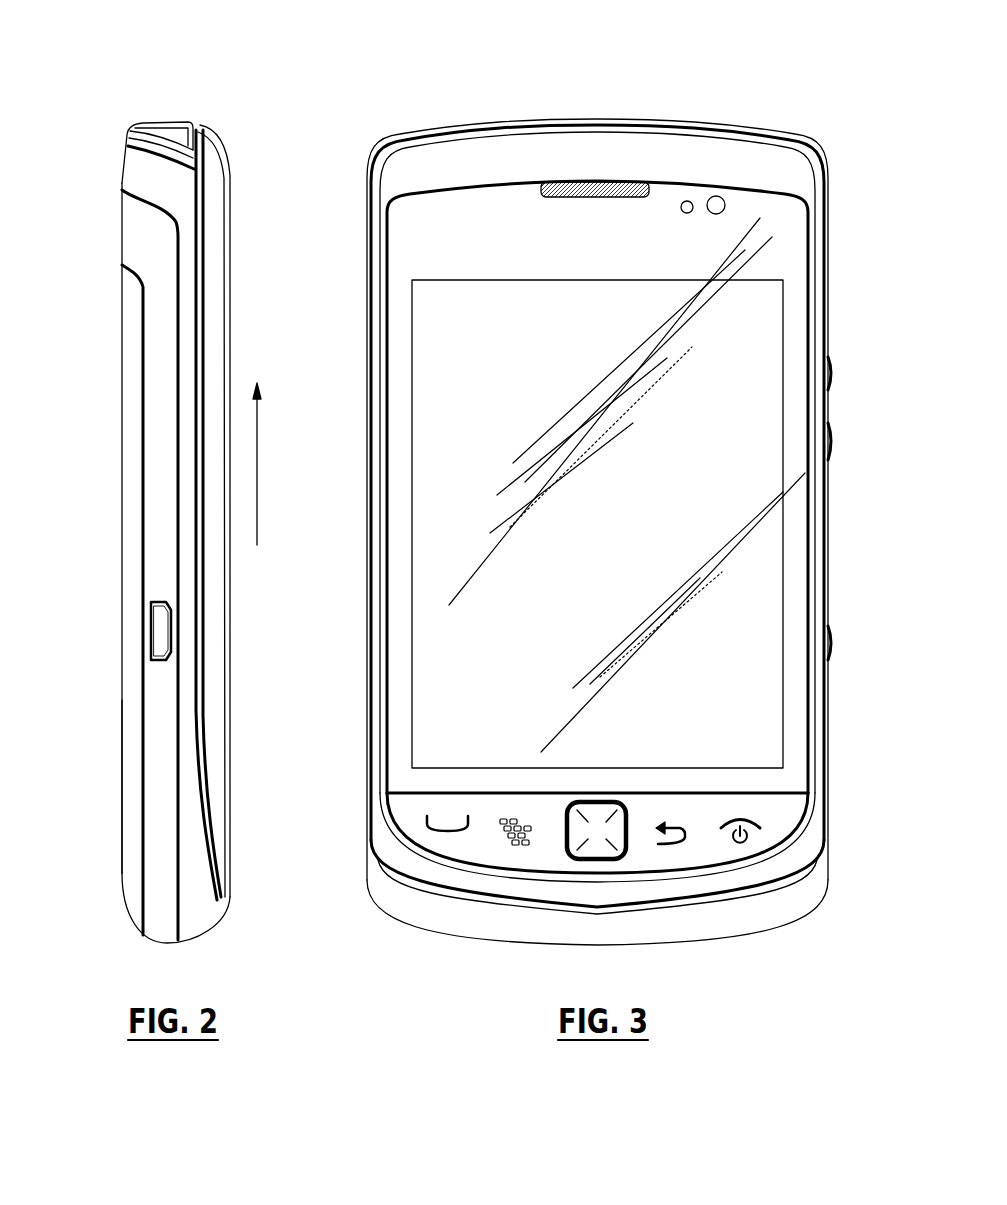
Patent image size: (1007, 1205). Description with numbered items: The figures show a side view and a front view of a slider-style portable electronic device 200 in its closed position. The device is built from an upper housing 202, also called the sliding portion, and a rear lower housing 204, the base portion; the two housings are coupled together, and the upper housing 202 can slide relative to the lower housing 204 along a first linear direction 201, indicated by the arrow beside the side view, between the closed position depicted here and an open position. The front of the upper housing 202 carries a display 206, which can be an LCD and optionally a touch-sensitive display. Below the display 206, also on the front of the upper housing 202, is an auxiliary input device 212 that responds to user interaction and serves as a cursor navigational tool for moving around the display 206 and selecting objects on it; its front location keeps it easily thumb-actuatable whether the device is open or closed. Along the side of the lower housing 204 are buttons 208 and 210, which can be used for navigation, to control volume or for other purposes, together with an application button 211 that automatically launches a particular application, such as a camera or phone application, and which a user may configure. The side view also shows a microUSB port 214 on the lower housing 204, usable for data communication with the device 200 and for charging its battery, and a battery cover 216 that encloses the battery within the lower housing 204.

In FIG. 2, the portable electronic device 200 is at (193, 92).
In FIG. 3, the portable electronic device 200 is at (628, 92).
In FIG. 2, the first linear direction 201 is at (258, 485).
In FIG. 2, the upper housing 202 is at (215, 253).
In FIG. 3, the upper housing 202 is at (818, 263).
In FIG. 2, the lower housing 204 is at (163, 400).
In FIG. 3, the lower housing 204 is at (410, 903).
In FIG. 3, the display 206 is at (437, 420).
In FIG. 3, the button 208 is at (829, 374).
In FIG. 3, the button 210 is at (829, 445).
In FIG. 3, the application button 211 is at (829, 643).
In FIG. 3, the auxiliary input device 212 is at (565, 827).
In FIG. 2, the microUSB port 214 is at (158, 640).
In FIG. 2, the battery cover 216 is at (130, 783).